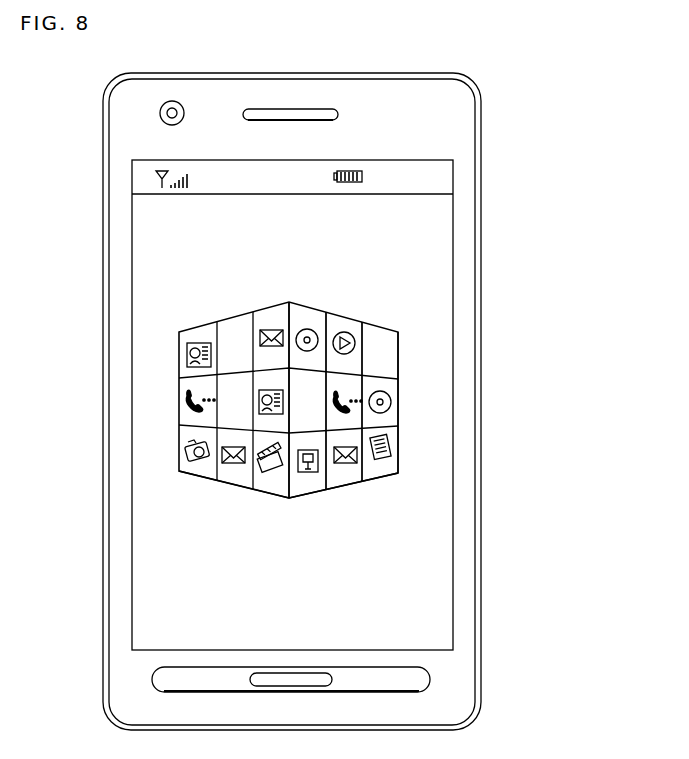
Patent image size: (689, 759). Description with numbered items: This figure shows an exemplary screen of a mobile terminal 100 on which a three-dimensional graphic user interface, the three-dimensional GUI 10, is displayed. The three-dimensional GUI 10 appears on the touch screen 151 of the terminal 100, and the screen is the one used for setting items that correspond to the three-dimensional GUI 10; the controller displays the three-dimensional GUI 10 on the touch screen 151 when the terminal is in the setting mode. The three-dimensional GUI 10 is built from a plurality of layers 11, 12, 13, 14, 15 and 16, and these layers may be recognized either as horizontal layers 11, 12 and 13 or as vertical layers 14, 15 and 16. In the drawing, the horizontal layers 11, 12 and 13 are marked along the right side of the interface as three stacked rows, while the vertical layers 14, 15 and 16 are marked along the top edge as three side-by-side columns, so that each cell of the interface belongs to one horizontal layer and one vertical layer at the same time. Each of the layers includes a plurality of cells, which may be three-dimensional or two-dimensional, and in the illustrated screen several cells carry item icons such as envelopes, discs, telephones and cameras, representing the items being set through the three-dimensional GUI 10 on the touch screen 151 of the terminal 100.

The 3D GUI 10 is at (236, 388).
The horizontal layer 11 is at (403, 334).
The horizontal layer 12 is at (403, 381).
The horizontal layer 13 is at (403, 428).
The vertical layer 14 is at (396, 324).
The vertical layer 15 is at (360, 314).
The vertical layer 16 is at (324, 304).
The mobile terminal 100 is at (482, 170).
The touch screen 151 is at (453, 263).